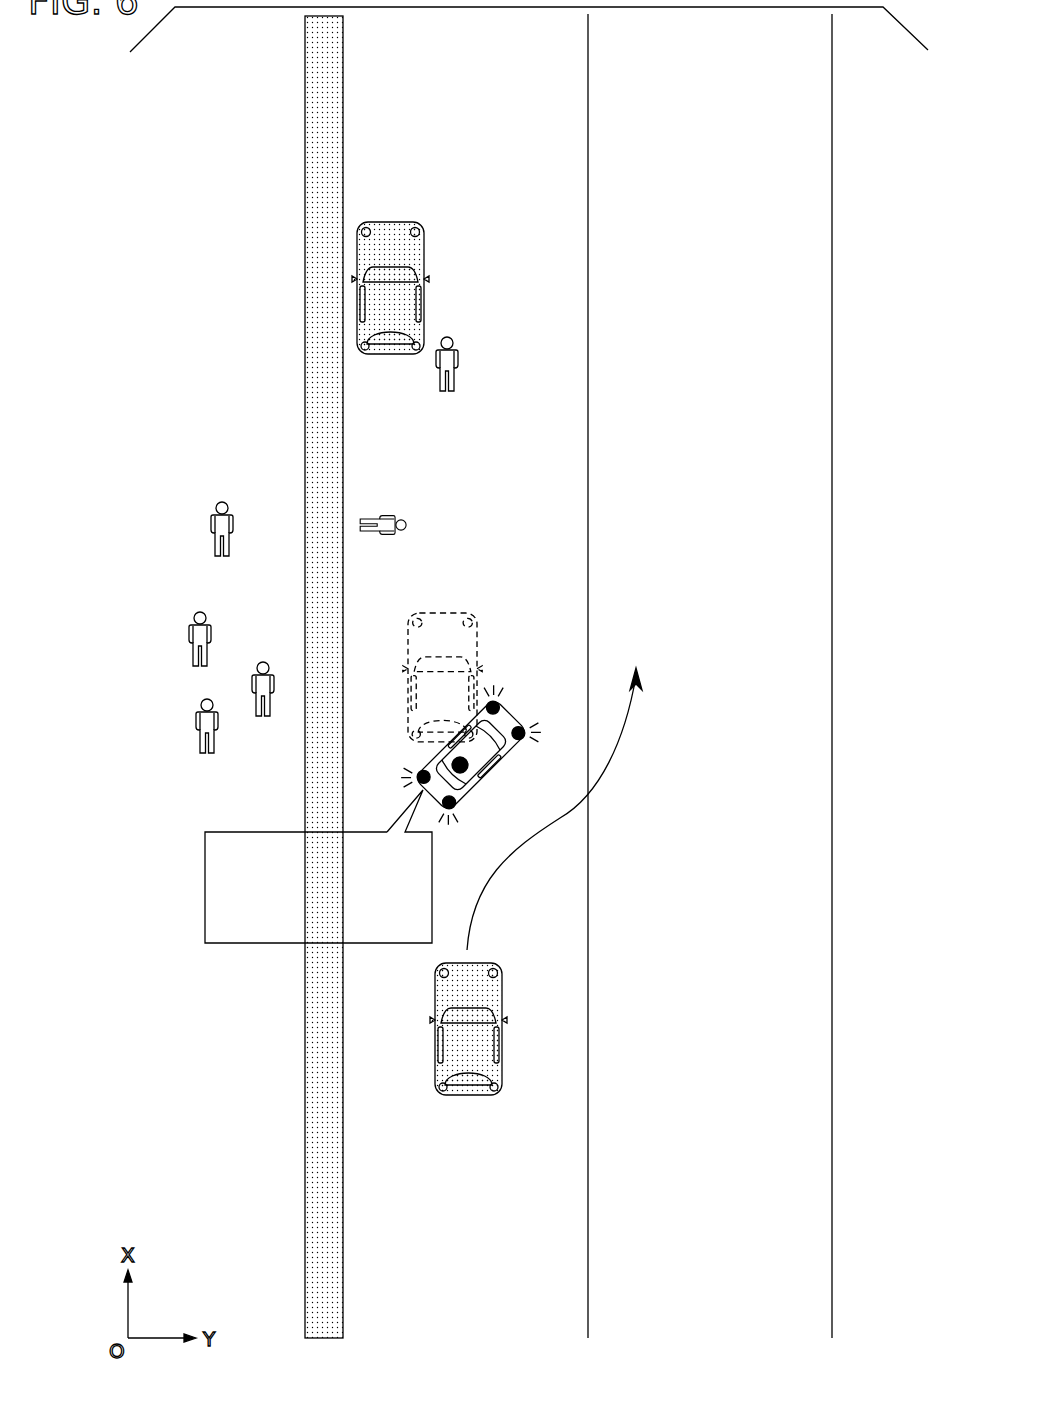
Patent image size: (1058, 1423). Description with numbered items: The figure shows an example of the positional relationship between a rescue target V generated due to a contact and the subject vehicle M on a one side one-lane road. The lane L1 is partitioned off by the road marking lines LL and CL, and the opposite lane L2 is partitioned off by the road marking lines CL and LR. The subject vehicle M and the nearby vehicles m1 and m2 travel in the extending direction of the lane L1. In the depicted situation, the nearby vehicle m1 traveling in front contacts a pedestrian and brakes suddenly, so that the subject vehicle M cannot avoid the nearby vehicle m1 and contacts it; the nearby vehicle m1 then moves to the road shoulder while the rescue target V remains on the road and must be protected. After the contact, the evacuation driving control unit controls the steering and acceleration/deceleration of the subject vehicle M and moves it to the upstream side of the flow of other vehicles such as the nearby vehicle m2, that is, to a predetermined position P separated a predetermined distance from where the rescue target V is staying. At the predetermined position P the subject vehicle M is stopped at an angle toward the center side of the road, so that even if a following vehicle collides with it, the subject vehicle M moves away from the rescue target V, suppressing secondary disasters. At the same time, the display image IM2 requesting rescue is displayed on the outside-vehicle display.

The nearby vehicle m1 is at (423, 286).
The nearby vehicle m2 is at (468, 1097).
The rescue target V is at (409, 525).
The subject vehicle M is at (525, 712).
The predetermined position P is at (467, 770).
The display image IM2 is at (205, 886).
The road marking line LL is at (343, 1252).
The road marking line CL is at (588, 1252).
The road marking line LR is at (832, 1252).
The lane L1 is at (483, 1324).
The opposite lane L2 is at (732, 1324).